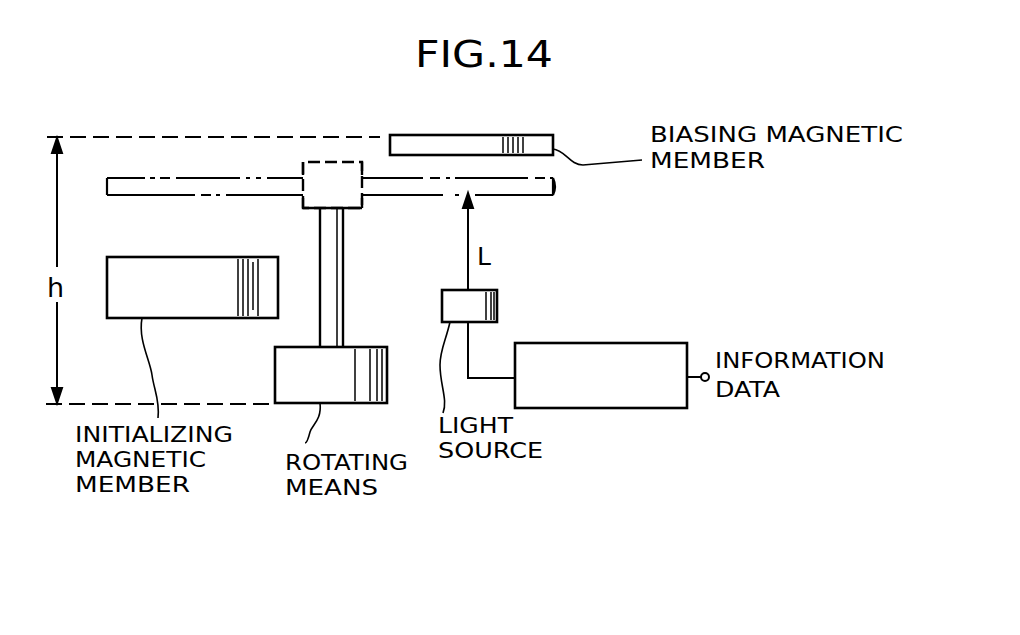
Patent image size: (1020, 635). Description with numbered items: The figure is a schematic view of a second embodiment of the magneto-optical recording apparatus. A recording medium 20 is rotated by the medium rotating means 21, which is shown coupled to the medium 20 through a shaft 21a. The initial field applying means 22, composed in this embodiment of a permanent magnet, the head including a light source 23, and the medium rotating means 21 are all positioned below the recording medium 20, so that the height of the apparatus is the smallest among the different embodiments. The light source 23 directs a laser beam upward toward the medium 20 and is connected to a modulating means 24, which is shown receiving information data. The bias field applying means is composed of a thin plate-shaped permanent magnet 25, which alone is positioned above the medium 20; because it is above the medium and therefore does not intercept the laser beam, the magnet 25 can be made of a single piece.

The recording medium 20 is at (557, 190).
The medium rotating means 21 is at (338, 403).
The rotating shaft 21a is at (343, 282).
The initial field applying means 22 is at (167, 318).
The light source 23 is at (483, 322).
The modulating means 24 is at (607, 343).
The thin plate-shaped permanent magnet 25 is at (553, 144).